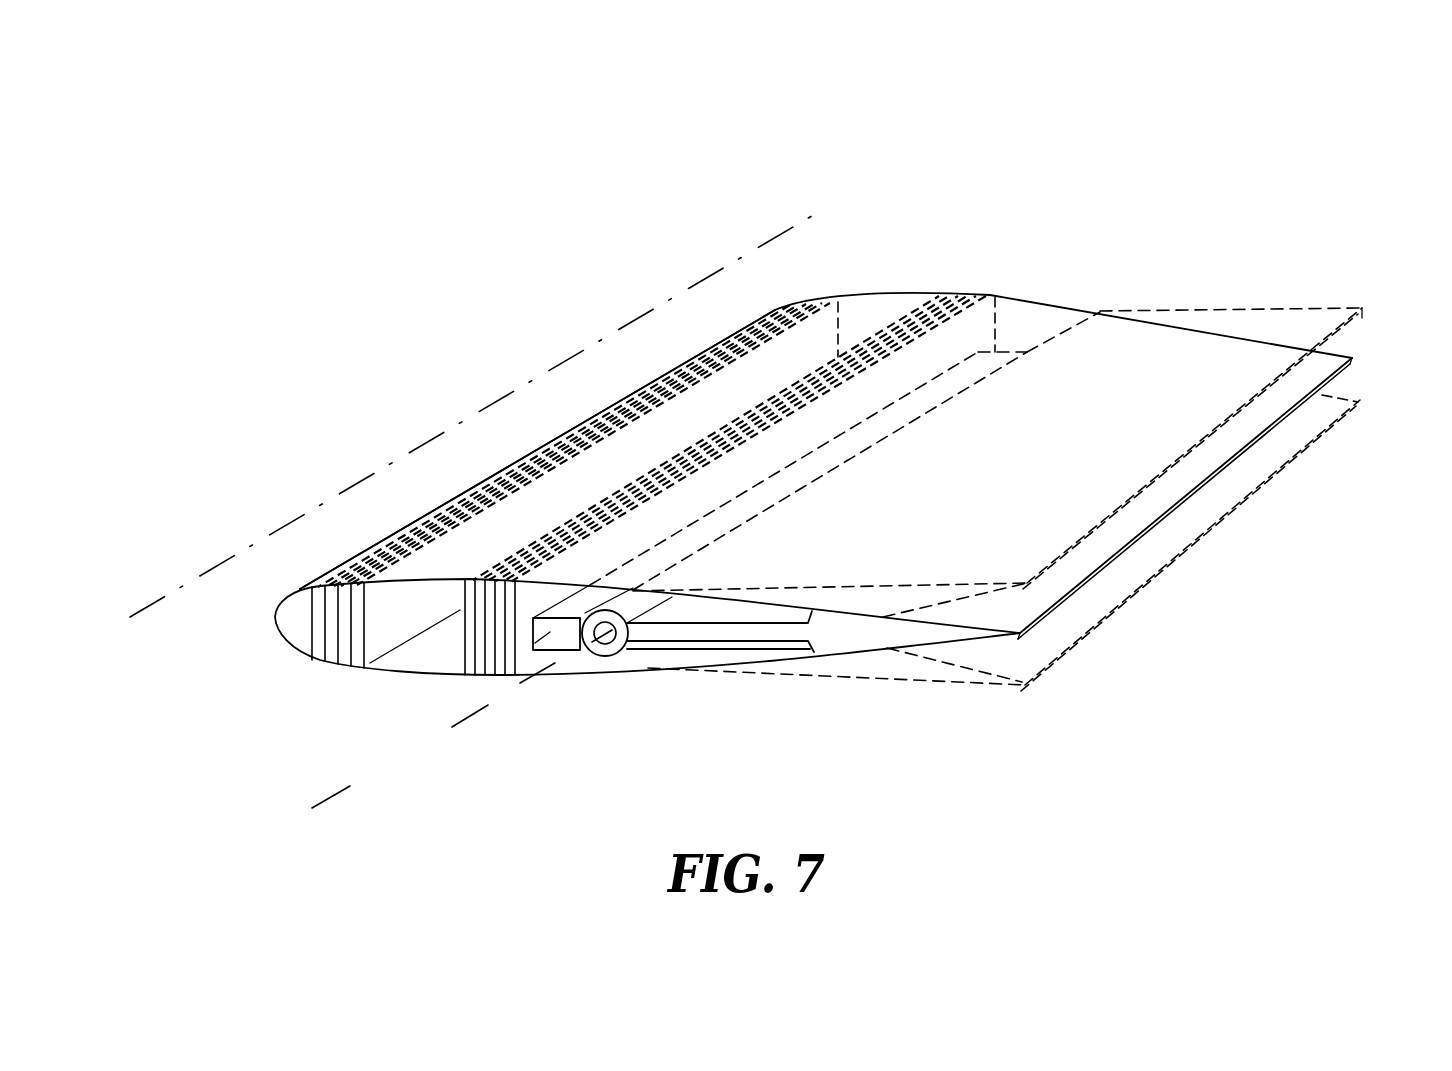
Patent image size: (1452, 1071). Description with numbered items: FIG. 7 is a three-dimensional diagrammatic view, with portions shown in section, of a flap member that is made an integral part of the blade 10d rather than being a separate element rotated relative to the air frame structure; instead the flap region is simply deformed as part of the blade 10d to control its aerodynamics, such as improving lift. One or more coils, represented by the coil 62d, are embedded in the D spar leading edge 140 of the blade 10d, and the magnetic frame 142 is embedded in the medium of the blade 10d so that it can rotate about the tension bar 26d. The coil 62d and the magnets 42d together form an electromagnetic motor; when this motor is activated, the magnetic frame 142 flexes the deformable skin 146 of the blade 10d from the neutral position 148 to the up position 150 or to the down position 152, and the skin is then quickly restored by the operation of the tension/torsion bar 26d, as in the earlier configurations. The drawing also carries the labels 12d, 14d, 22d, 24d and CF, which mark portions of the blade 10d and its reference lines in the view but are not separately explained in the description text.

The blade 10d is at (1097, 158).
The airfoil body 12d is at (927, 258).
The trailing edge flap panel 14d is at (1208, 347).
The chord line 22d is at (223, 560).
The hinge axis 24d is at (360, 780).
The tension/torsion bar 26d is at (602, 644).
The magnets 42d is at (535, 642).
The coil 62d is at (478, 631).
The D spar leading edge 140 is at (521, 457).
The magnetic frame 142 is at (667, 635).
The deformable skin 146 is at (1124, 323).
The neutral position 148 is at (1347, 358).
The up position 150 is at (1323, 308).
The down position 152 is at (1308, 450).
The chord flexure line CF is at (851, 199).